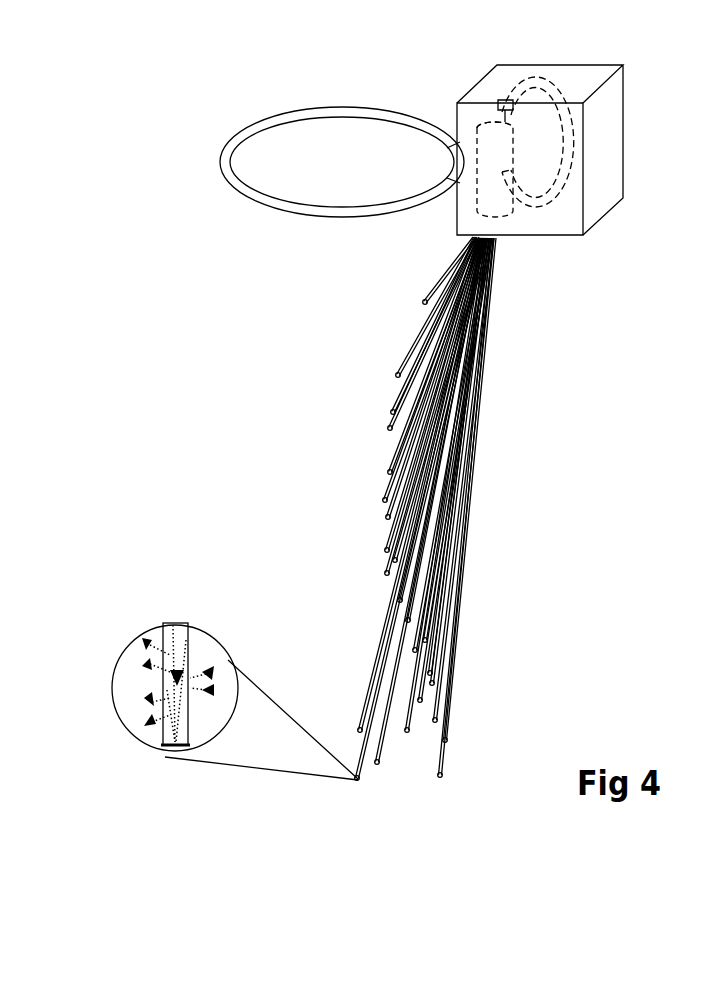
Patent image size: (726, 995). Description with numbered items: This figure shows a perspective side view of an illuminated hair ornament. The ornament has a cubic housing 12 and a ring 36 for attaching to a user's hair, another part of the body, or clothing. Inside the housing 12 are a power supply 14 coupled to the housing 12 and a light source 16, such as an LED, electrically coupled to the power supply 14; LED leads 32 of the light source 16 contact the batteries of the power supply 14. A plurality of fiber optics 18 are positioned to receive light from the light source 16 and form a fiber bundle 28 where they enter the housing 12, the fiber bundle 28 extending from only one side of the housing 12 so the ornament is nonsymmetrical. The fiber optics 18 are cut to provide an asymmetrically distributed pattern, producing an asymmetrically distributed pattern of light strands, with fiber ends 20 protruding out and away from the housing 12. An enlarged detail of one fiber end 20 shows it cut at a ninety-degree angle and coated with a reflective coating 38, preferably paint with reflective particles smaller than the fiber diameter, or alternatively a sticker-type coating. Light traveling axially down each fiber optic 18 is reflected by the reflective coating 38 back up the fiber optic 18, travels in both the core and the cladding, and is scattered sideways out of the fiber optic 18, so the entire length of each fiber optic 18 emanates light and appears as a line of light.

The housing 12 is at (623, 110).
The power supply 14 is at (563, 188).
The light source 16 is at (462, 205).
The fiber optics 18 is at (462, 592).
The fiber ends 20 is at (188, 732).
The fiber bundle 28 is at (498, 252).
The LED leads 32 is at (512, 103).
The ring 36 is at (320, 215).
The reflective coating 38 is at (163, 753).